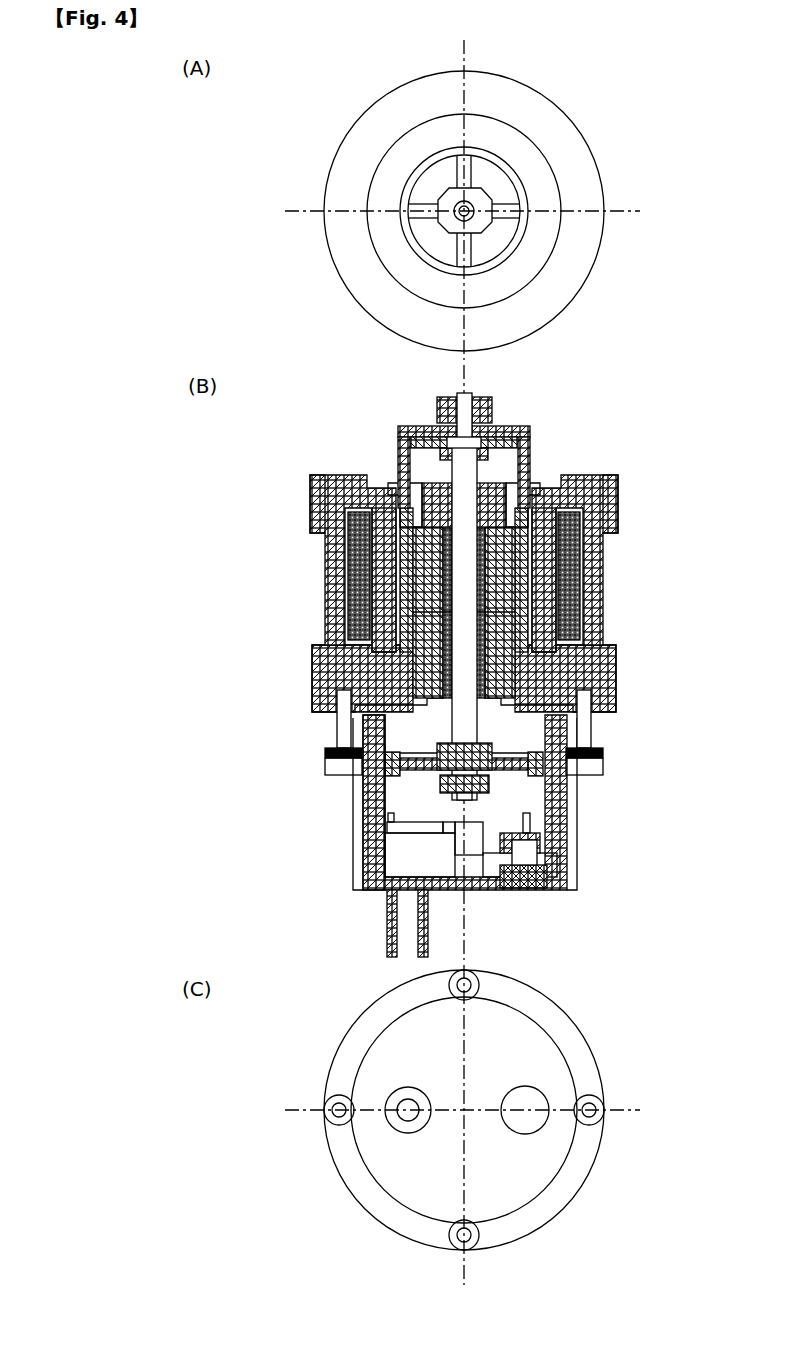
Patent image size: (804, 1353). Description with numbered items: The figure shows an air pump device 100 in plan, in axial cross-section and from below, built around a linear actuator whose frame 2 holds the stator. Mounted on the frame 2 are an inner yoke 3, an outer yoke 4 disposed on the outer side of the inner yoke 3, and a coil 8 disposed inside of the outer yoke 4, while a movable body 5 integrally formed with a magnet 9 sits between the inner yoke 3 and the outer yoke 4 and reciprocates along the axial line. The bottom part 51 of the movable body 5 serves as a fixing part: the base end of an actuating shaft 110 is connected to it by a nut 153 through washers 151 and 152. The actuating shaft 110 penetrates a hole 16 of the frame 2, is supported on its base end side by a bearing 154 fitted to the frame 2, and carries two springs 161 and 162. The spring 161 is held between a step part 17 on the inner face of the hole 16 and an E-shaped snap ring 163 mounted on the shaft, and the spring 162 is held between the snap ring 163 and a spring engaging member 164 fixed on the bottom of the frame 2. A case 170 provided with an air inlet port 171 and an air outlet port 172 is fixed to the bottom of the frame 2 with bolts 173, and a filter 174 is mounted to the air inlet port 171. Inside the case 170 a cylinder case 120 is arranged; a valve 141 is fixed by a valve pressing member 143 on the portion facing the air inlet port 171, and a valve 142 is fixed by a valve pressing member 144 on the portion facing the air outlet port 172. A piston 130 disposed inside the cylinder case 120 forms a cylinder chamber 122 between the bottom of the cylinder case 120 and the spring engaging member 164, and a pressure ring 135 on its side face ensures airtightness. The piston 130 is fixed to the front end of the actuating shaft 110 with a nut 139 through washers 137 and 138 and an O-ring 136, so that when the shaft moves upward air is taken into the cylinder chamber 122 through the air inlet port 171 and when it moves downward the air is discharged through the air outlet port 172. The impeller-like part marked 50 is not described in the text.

The frame 2 is at (592, 187).
The inner yoke 3 is at (560, 655).
The outer yoke 4 is at (530, 158).
The movable body 5 is at (397, 478).
The coil 8 is at (590, 622).
The magnet 9 is at (580, 562).
The hole 16 is at (536, 492).
The step part 17 is at (318, 482).
The impeller 50 is at (493, 117).
The bottom part 51 is at (496, 428).
The air pump device 100 is at (598, 77).
The actuating shaft 110 is at (468, 458).
The cylinder case 120 is at (368, 800).
The cylinder chamber 122 is at (455, 822).
The piston 130 is at (413, 790).
The pressure ring 135 is at (382, 772).
The O-ring 136 is at (560, 740).
The washer 137 is at (440, 745).
The washer 138 is at (440, 790).
The nut 139 is at (490, 778).
The valve 141 is at (545, 853).
The valve 142 is at (385, 833).
The valve pressing member 143 is at (548, 836).
The valve pressing member 144 is at (388, 856).
The washer 151 is at (430, 442).
The washer 152 is at (400, 447).
The nut 153 is at (450, 198).
The bearing 154 is at (512, 462).
The spring 161 is at (425, 600).
The spring 162 is at (398, 672).
The E-shaped snap ring 163 is at (385, 640).
The spring engaging member 164 is at (378, 768).
The case 170 is at (362, 890).
The air inlet port 171 is at (520, 865).
The air outlet port 172 is at (388, 906).
The bolt 173 is at (337, 735).
The filter 174 is at (540, 878).